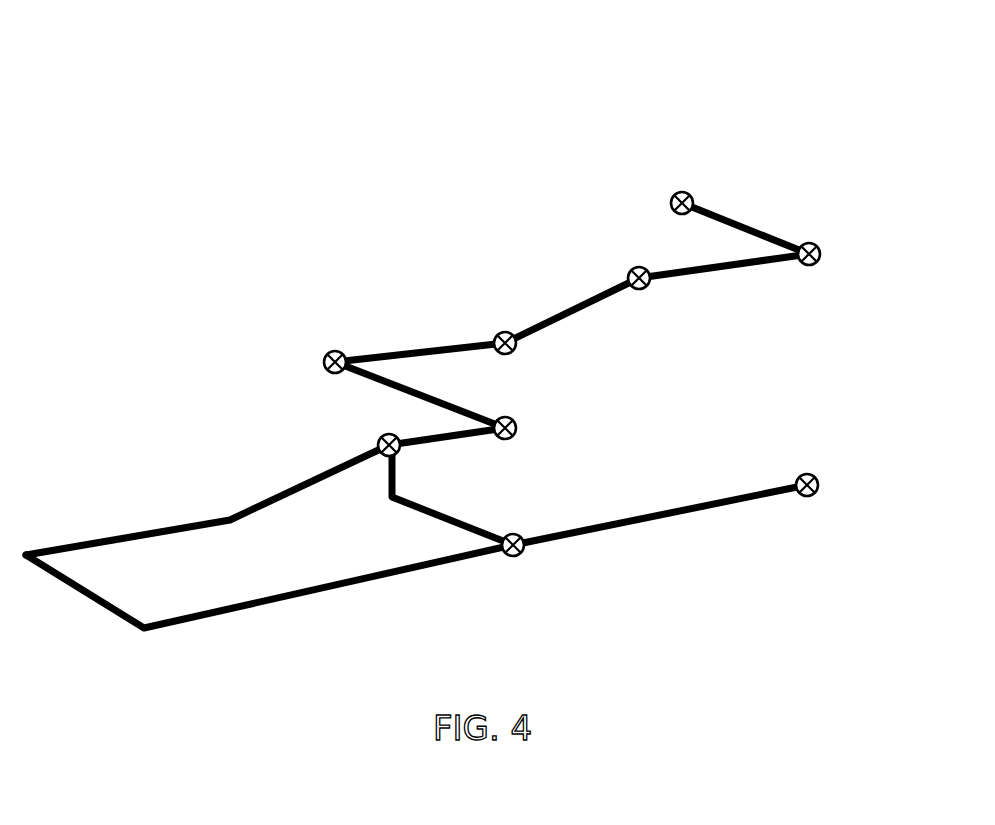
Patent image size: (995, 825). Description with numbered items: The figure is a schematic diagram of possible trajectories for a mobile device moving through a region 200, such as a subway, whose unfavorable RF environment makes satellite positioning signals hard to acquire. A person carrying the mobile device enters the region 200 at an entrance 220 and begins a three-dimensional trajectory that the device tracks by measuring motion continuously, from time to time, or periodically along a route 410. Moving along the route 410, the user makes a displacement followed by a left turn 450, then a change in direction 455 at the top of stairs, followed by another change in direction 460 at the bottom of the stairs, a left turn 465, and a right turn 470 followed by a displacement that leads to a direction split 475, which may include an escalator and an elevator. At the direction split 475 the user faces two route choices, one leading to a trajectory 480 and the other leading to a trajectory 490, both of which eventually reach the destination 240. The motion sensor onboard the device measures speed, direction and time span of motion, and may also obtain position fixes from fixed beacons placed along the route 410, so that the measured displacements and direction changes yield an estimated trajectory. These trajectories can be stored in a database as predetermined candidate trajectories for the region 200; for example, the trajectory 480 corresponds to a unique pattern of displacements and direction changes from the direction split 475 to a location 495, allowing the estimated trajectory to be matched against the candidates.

The region 200 is at (217, 143).
The entrance 220 is at (689, 194).
The destination 240 is at (811, 474).
The route 410 is at (745, 226).
The left turn 450 is at (819, 248).
The change in direction 455 is at (633, 267).
The change in direction 460 is at (510, 355).
The left turn 465 is at (330, 350).
The right turn 470 is at (511, 439).
The direction split 475 is at (383, 434).
The trajectory 480 is at (290, 486).
The trajectory 490 is at (414, 512).
The location 495 is at (518, 556).